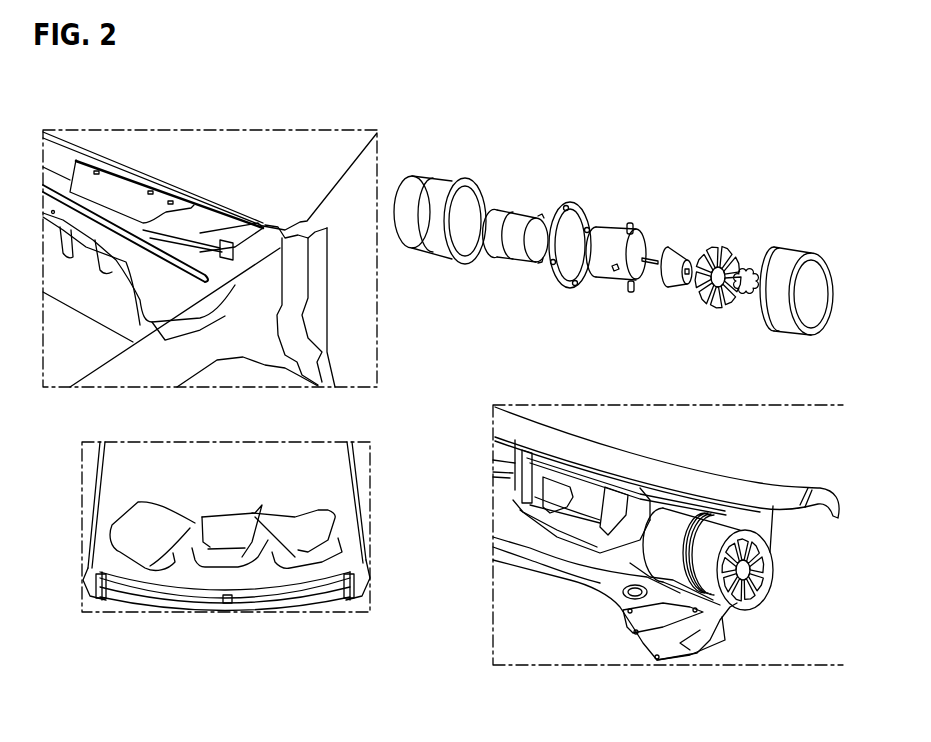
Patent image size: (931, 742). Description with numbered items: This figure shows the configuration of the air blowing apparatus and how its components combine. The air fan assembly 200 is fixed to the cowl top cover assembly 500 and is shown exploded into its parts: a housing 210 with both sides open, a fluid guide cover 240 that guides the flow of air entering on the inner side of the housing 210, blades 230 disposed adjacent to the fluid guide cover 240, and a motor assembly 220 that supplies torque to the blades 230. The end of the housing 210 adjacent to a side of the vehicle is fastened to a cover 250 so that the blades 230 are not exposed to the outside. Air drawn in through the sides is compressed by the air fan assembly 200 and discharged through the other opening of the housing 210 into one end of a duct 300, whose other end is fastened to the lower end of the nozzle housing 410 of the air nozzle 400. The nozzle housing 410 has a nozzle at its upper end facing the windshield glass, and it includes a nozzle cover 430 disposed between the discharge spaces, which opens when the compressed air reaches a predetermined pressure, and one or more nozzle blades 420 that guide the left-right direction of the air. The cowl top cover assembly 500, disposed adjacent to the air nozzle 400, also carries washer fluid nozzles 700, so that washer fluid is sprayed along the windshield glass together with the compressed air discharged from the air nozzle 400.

The air fan assembly 200 is at (556, 172).
The housing 210 is at (450, 183).
The motor assembly 220 is at (613, 235).
The blades 230 is at (717, 247).
The fluid guide cover 240 is at (750, 268).
The cover 250 is at (802, 257).
The duct 300 is at (112, 187).
The air nozzle 400 is at (637, 478).
The nozzle housing 410 is at (567, 493).
The nozzle blade 420 is at (535, 498).
The nozzle cover 430 is at (590, 487).
The cowl top cover assembly 500 is at (205, 212).
The washer fluid nozzles 700 is at (347, 602).